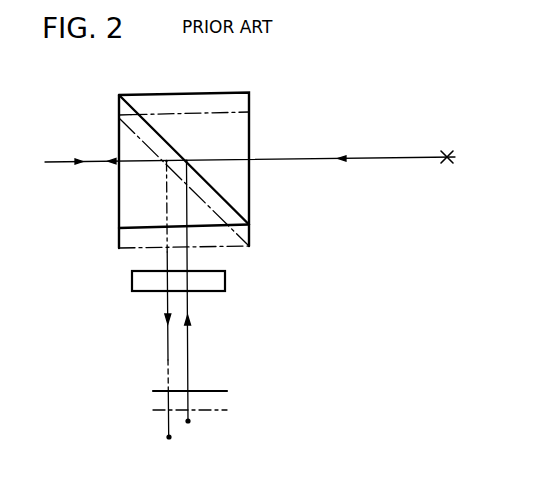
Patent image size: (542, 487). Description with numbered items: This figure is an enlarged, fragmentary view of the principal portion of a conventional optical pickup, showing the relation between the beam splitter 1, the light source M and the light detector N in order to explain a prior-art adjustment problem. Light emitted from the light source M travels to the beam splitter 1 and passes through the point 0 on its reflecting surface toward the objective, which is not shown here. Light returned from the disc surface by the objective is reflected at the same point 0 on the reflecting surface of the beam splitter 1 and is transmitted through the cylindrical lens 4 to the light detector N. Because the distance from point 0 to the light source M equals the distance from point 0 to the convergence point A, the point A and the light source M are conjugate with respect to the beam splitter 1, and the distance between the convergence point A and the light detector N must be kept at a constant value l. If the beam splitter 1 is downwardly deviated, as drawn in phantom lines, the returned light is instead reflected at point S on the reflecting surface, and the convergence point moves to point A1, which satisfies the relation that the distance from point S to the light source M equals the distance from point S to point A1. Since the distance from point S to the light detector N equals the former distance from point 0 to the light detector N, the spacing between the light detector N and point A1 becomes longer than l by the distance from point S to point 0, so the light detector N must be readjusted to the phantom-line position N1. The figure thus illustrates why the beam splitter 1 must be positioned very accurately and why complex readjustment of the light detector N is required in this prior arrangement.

The beam splitter 1 is at (244, 98).
The point O 0 is at (187, 160).
The point S is at (165, 162).
The light source M is at (450, 150).
The cylindrical lens 4 is at (225, 280).
The light detector N is at (199, 390).
The position N1 is at (202, 410).
The convergence point A is at (191, 431).
The point A1 is at (170, 450).